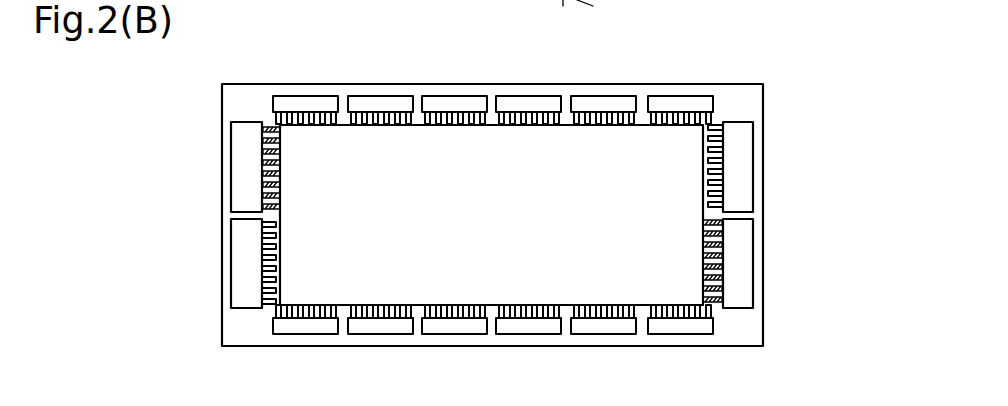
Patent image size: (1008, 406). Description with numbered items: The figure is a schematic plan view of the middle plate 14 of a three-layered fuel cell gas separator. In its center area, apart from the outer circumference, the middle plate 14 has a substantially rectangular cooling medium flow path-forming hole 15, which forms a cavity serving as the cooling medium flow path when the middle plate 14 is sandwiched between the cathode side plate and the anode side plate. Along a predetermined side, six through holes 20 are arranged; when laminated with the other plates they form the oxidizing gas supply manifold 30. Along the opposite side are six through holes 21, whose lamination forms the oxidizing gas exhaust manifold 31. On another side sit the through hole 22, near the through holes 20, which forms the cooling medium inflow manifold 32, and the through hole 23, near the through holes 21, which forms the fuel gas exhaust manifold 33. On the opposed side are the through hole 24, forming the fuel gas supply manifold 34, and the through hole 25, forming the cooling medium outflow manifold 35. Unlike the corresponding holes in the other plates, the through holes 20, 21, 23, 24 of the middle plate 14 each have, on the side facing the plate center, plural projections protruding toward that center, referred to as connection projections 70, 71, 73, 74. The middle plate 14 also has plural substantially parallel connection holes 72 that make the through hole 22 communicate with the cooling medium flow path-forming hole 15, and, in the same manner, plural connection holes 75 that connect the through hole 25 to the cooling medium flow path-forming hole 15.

The middle plate 14 is at (488, 60).
The cooling medium flow path-forming hole 15 is at (506, 228).
The through holes 20 is at (493, 109).
The oxidizing gas supply manifold 30 is at (493, 109).
The through holes 21 is at (493, 321).
The oxidizing gas exhaust manifold 31 is at (493, 321).
The through hole 22 is at (222, 167).
The cooling medium inflow manifold 32 is at (222, 167).
The through hole 23 is at (222, 263).
The fuel gas exhaust manifold 33 is at (222, 263).
The through hole 24 is at (762, 167).
The fuel gas supply manifold 34 is at (762, 167).
The through hole 25 is at (762, 263).
The cooling medium outflow manifold 35 is at (762, 263).
The connection projections 70 is at (458, 116).
The connection projections 71 is at (533, 307).
The connection holes 72 is at (298, 168).
The connection projections 73 is at (297, 263).
The connection projections 74 is at (707, 161).
The connection holes 75 is at (702, 258).